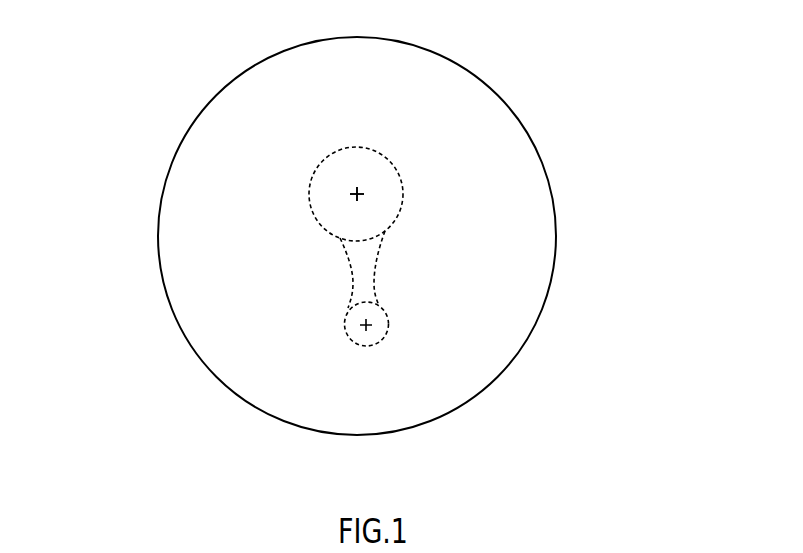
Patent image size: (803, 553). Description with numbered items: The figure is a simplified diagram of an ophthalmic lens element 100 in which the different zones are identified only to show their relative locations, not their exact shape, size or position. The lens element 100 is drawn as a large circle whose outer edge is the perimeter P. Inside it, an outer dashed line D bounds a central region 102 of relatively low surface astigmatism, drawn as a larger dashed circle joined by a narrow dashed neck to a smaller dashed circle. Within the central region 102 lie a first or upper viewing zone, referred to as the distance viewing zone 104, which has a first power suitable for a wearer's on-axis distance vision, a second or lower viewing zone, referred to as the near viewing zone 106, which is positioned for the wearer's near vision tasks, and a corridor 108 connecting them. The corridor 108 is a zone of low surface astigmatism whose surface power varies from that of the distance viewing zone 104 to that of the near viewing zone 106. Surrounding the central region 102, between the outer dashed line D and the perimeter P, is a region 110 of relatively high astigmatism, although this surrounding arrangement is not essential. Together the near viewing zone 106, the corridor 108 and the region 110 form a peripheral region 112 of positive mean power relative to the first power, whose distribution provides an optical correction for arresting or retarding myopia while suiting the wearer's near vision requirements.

The ophthalmic lens element 100 is at (149, 100).
The central region 102 is at (418, 197).
The distance viewing zone 104 is at (332, 203).
The near viewing zone 106 is at (350, 328).
The corridor 108 is at (363, 263).
The region of relatively high astigmatism 110 is at (208, 293).
The peripheral region 112 is at (457, 360).
The outer dashed line D is at (390, 160).
The perimeter P is at (200, 367).